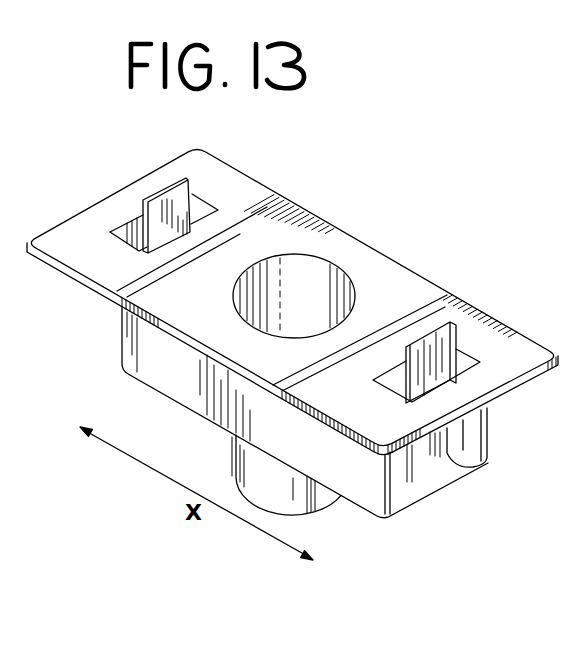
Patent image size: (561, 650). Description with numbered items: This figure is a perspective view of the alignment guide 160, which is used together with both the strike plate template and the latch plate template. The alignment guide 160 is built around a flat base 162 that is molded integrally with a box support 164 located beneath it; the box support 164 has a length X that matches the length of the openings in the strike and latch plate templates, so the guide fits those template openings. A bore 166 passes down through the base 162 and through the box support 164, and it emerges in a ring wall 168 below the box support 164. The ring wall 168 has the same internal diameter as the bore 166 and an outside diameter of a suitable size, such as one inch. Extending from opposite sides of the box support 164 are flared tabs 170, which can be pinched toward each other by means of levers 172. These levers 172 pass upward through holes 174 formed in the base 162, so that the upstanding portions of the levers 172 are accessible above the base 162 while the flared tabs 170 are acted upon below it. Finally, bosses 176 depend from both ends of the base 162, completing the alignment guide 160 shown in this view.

The alignment guide 160 is at (494, 562).
The base 162 is at (200, 302).
The box support 164 is at (177, 379).
The bore 166 is at (308, 277).
The ring wall 168 is at (313, 506).
The flared tabs 170 is at (488, 463).
The levers 172 is at (187, 203).
The holes 174 is at (122, 233).
The bosses 176 is at (138, 240).